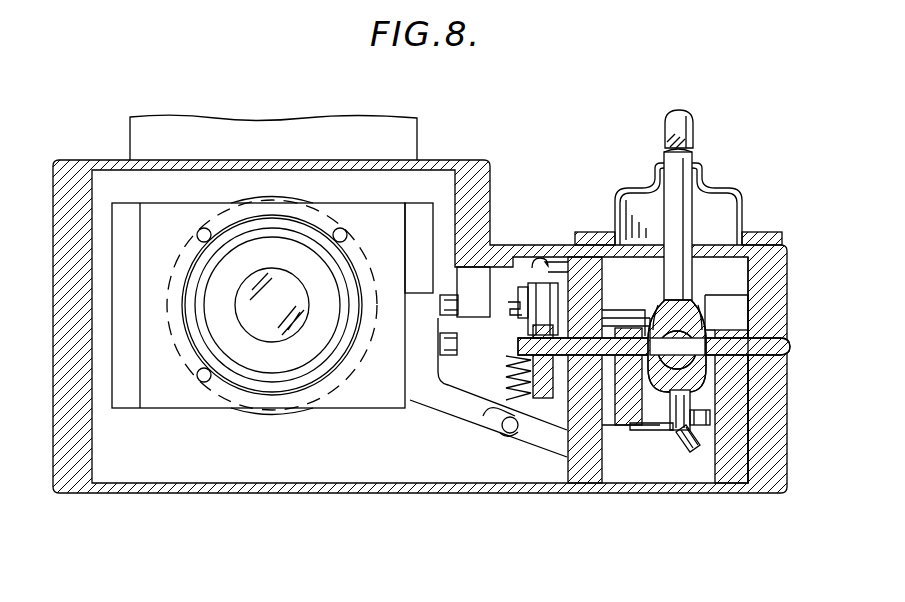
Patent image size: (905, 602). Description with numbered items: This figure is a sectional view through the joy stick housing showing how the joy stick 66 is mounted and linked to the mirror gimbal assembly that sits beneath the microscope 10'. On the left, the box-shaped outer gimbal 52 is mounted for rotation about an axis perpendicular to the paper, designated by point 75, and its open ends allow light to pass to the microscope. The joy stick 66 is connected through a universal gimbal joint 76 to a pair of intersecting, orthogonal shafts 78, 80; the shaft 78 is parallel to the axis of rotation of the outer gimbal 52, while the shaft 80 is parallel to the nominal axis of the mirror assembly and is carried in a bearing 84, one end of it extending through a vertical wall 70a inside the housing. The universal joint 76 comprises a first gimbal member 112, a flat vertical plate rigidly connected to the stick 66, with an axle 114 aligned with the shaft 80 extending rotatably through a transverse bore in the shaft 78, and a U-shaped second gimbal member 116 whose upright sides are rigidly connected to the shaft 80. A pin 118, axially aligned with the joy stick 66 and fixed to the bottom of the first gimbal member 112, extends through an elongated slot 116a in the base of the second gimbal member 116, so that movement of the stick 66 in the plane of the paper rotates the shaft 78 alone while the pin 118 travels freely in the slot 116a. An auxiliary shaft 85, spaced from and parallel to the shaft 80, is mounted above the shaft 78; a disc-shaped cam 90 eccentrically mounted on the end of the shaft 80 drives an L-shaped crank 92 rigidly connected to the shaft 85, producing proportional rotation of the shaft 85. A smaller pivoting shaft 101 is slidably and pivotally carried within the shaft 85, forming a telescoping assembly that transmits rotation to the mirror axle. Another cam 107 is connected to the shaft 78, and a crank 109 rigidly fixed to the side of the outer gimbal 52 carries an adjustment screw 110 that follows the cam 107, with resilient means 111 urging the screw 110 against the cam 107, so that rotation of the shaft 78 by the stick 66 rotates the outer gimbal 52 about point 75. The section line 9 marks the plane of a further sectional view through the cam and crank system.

The camera housing top portion 10' is at (302, 137).
The outer gimbal 52 is at (418, 222).
The point 75 is at (287, 292).
The section line 9- 9 is at (515, 300).
The joy stick 66 is at (688, 158).
The shaft 78 is at (697, 268).
The vertical wall 70a is at (587, 277).
The auxiliary shaft 85 is at (703, 284).
The bearing 84 is at (606, 312).
The shaft 80 is at (570, 330).
The smaller shaft 101 is at (517, 300).
The L-shaped crank 92 is at (525, 320).
The axle 114 is at (650, 325).
The disc shaped cam 90 is at (507, 372).
The crank 109 is at (448, 408).
The resilient means 111 is at (497, 432).
The second gimbal member 116 is at (610, 412).
The first gimbal member 112 is at (660, 366).
The cam 107 is at (643, 432).
The adjustment screw 110 is at (690, 458).
The elongated slot 116a is at (694, 456).
The pin 118 is at (700, 426).
The universal gimbal joint 76 is at (740, 431).